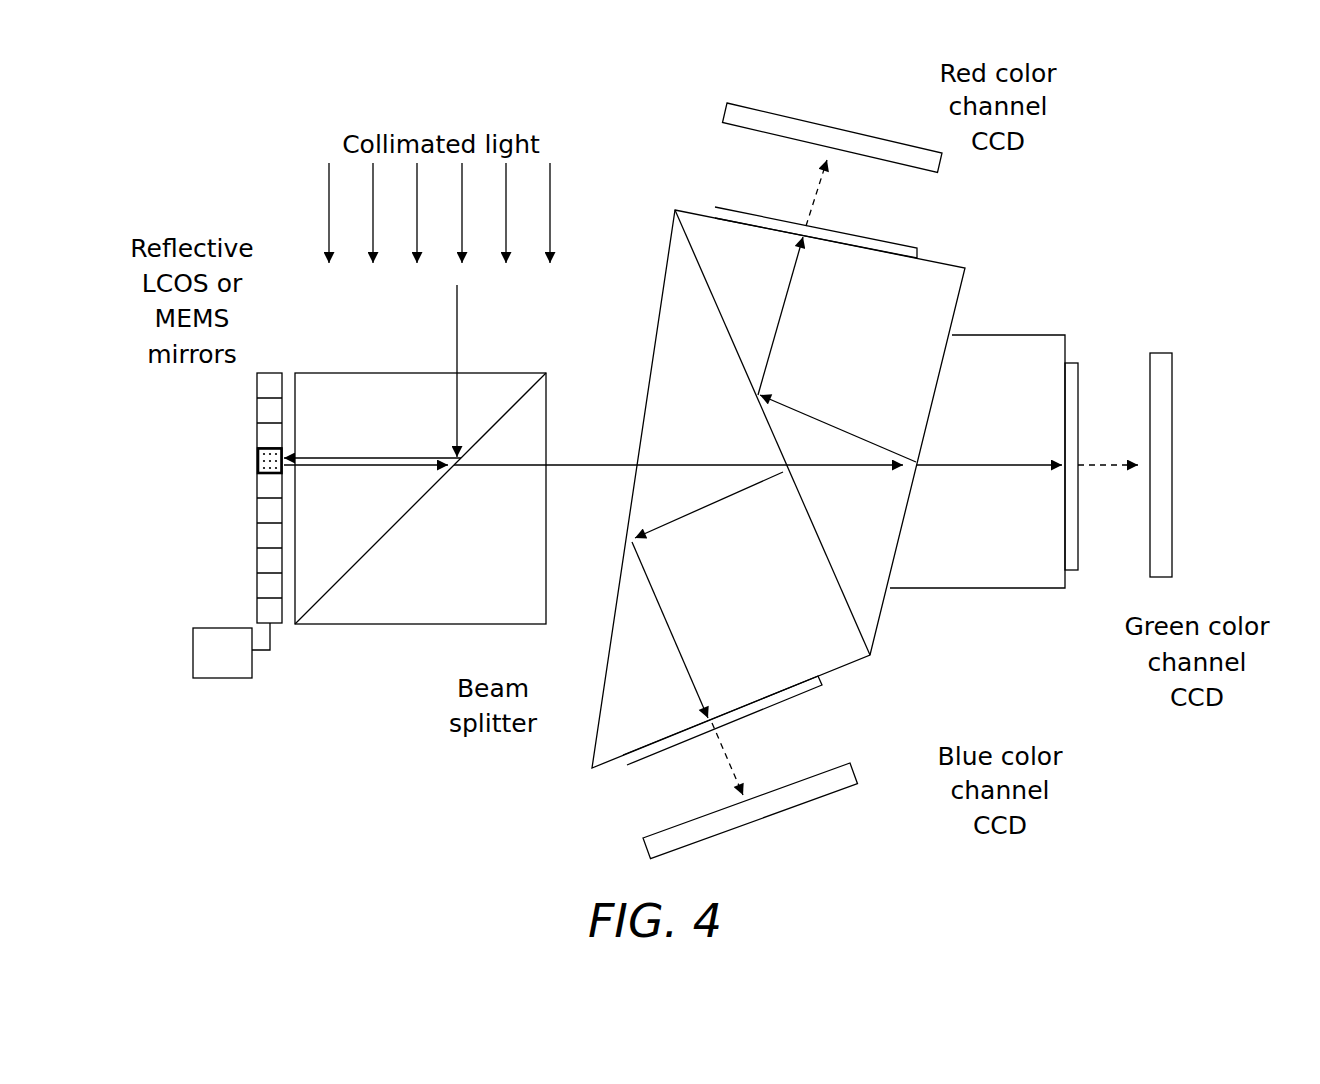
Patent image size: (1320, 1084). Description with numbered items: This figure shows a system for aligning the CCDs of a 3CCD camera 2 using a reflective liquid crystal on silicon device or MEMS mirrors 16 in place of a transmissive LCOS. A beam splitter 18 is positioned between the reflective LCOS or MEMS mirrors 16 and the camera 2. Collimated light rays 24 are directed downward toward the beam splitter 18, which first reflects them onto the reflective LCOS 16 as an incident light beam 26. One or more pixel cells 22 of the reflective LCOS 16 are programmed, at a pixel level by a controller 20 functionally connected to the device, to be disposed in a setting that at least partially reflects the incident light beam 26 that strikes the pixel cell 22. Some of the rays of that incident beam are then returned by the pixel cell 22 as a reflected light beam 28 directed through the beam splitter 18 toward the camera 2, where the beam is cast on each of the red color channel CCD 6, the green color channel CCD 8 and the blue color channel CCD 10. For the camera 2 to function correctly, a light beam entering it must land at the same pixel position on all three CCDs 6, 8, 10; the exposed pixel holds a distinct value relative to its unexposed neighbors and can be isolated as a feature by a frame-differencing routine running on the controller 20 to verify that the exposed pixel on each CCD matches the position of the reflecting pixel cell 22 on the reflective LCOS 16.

The 3CCD camera 2 is at (975, 636).
The red color channel CCD 6 is at (882, 137).
The green color channel CCD 8 is at (1172, 563).
The blue color channel CCD 10 is at (855, 770).
The reflective LCOS or MEMS mirrors 16 is at (226, 420).
The beam splitter 18 is at (513, 625).
The controller 20 is at (231, 650).
The pixel cell 22 is at (255, 461).
The collimated light rays 24 is at (550, 188).
The incident light beam 26 is at (315, 457).
The reflected light beam 28 is at (362, 467).